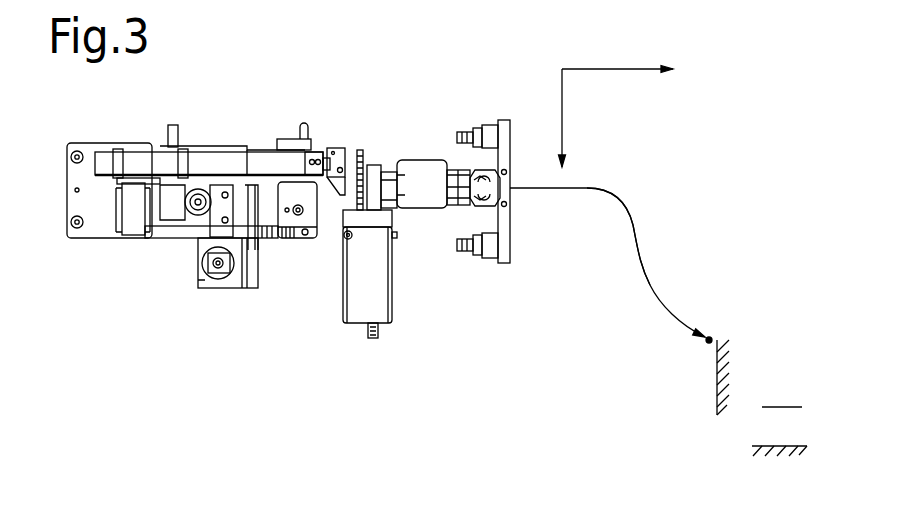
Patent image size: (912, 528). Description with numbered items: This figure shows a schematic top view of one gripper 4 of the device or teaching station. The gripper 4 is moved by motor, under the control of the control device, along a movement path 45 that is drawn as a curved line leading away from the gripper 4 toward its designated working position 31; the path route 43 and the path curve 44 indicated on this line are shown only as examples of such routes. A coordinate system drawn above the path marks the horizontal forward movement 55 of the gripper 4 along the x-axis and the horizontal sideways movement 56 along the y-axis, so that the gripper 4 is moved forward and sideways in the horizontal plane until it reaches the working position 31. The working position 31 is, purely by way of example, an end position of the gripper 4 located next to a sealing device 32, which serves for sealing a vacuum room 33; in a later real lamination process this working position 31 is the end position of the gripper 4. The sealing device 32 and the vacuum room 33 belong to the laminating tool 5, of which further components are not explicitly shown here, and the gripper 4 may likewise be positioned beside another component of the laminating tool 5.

The gripper 4 is at (338, 93).
The horizontal forward movement 55 is at (605, 69).
The horizontal sideways movement 56 is at (562, 80).
The path curve 44 is at (630, 250).
The movement path 45 is at (633, 220).
The path route 43 is at (643, 280).
The working position 31 is at (712, 337).
The sealing device 32 is at (717, 372).
The vacuum room 33 is at (782, 385).
The laminating tool 5 is at (783, 452).